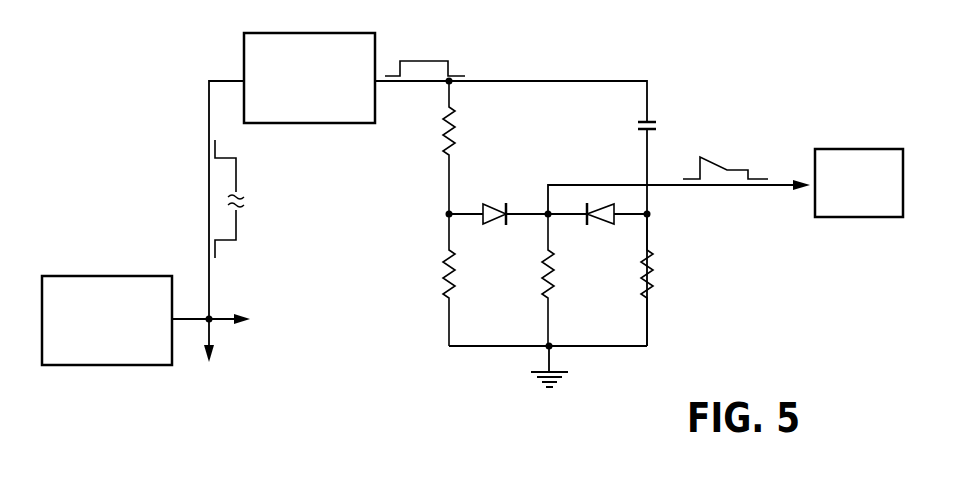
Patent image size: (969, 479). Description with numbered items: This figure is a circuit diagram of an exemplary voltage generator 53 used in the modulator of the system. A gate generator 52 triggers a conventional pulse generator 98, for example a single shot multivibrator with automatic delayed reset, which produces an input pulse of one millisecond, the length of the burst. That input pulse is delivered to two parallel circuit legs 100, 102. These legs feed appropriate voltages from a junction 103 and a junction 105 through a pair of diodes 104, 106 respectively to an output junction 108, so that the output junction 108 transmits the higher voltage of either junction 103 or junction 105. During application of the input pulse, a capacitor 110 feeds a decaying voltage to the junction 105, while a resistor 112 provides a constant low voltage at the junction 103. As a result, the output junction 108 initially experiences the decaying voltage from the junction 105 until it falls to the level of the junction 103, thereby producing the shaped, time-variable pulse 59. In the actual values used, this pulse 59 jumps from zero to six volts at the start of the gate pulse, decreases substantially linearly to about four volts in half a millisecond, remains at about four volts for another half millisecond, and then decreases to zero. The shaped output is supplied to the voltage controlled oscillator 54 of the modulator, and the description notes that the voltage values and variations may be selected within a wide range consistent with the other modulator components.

The pulse generator 98 is at (366, 30).
The voltage generator 53 is at (444, 49).
The resistor 112 is at (465, 138).
The capacitor 110 is at (650, 120).
The junction 103 is at (446, 213).
The diode 104 is at (498, 205).
The output junction 108 is at (546, 217).
The diode 106 is at (606, 204).
The junction 105 is at (650, 216).
The parallel circuit leg 100 is at (449, 310).
The parallel circuit leg 102 is at (648, 318).
The time-variable pulse 59 is at (704, 158).
The voltage controlled oscillator 54 is at (833, 149).
The gate generator 52 is at (118, 275).